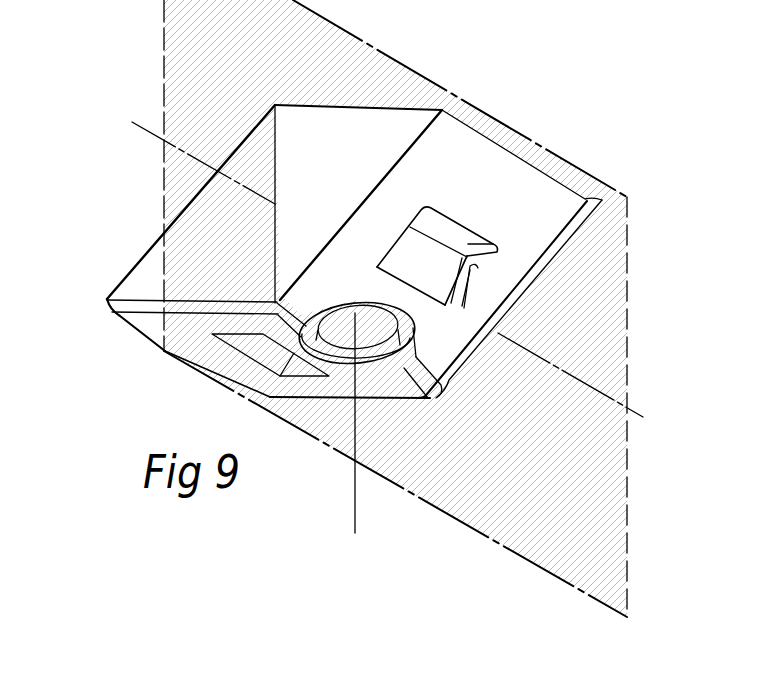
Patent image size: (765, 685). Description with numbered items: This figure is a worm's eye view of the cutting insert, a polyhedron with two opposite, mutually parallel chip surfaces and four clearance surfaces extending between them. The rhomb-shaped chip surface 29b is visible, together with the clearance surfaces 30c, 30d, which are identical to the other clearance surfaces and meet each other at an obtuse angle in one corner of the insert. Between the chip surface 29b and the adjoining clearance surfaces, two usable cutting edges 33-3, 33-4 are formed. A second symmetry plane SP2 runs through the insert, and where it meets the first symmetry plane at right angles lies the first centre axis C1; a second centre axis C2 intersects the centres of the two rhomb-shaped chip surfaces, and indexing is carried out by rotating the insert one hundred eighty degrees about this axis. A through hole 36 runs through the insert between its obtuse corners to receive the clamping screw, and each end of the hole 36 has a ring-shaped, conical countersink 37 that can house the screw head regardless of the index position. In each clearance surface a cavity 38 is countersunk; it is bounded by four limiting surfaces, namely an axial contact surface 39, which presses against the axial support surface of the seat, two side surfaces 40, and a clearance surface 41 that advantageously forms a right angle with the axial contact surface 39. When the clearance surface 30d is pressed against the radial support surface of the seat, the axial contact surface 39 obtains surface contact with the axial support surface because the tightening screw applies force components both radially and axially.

The second symmetry plane SP2 is at (178, 44).
The second centre axis C2 is at (147, 131).
The first centre axis C1 is at (353, 494).
The cutting edge 33-4 is at (134, 265).
The cutting edge 33-3 is at (377, 186).
The chip surface 29b is at (339, 190).
The clearance surface 30c is at (517, 191).
The clearance surface 30d is at (158, 320).
The through hole 36 is at (349, 322).
The conical countersink 37 is at (405, 354).
The cavity 38 is at (452, 200).
The axial contact surface 39 is at (408, 276).
The side surfaces 40 is at (462, 301).
The clearance surface of the cavity 41 is at (463, 228).